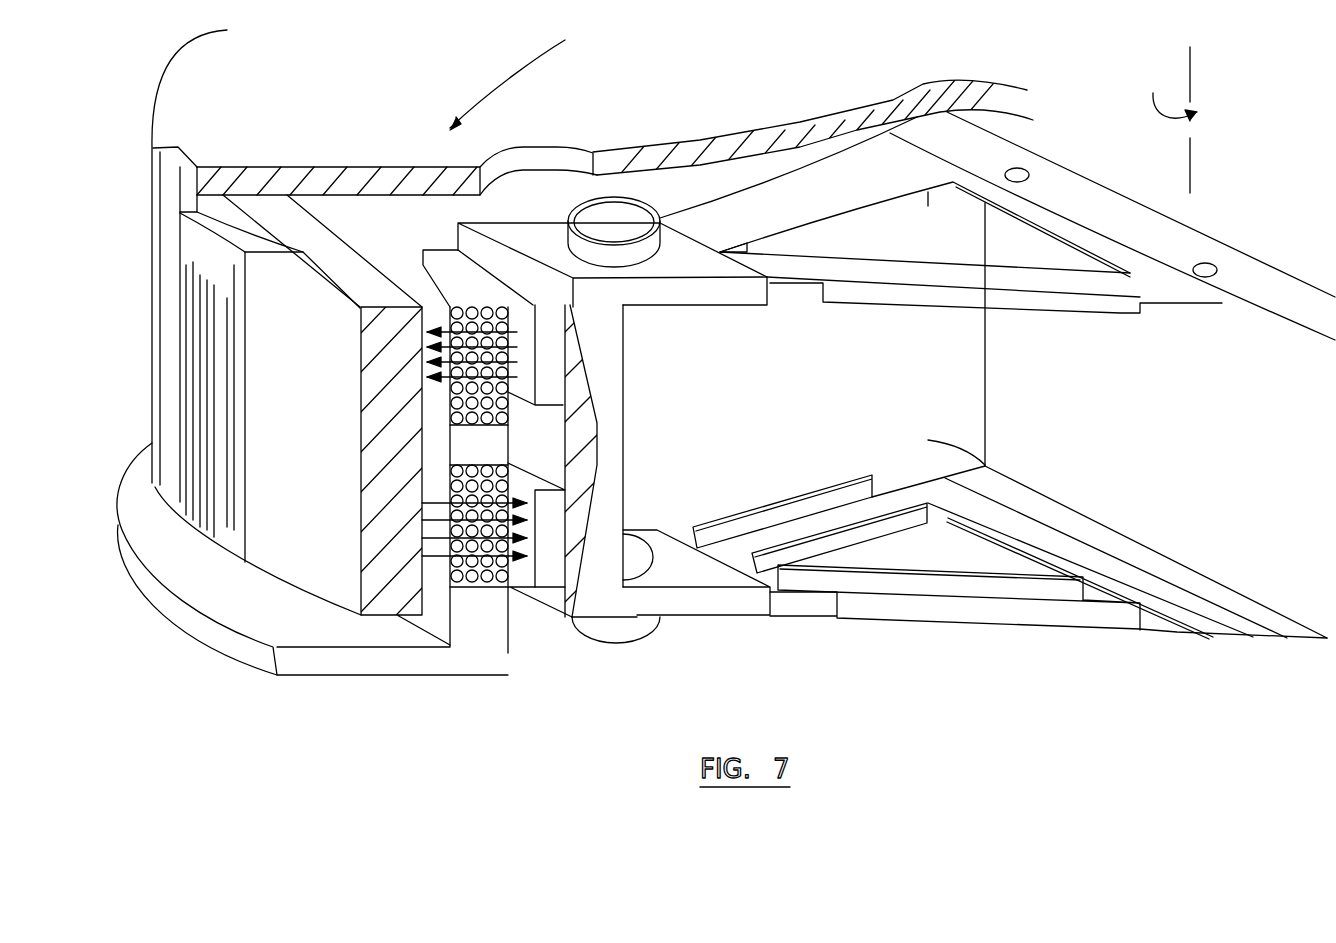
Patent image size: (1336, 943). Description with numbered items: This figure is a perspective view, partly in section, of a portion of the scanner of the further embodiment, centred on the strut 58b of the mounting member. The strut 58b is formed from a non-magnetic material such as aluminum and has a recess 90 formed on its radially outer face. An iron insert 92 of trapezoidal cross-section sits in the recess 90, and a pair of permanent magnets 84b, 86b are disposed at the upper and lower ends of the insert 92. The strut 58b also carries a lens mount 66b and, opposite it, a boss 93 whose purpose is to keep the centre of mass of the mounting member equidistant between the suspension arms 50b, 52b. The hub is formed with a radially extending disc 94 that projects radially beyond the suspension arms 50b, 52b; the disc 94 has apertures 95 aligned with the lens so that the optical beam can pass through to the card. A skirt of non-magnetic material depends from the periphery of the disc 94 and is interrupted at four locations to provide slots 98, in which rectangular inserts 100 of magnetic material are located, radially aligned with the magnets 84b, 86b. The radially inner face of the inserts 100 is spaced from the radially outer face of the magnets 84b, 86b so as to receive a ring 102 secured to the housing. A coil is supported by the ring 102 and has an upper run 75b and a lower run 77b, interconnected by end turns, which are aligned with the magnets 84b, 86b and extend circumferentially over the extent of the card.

The suspension arm 50b is at (1020, 305).
The suspension arm 52b is at (1117, 618).
The strut 58b is at (614, 331).
The lens mount 66b is at (570, 238).
The upper run 75b is at (450, 305).
The lower run 77b is at (518, 596).
The permanent magnet 84b is at (583, 315).
The permanent magnet 86b is at (550, 500).
The recess 90 is at (584, 380).
The iron insert 92 is at (597, 424).
The boss 93 is at (640, 630).
The disc 94 is at (787, 132).
The aperture 95 is at (530, 153).
The slot 98 is at (270, 347).
The rectangular insert 100 is at (315, 423).
The ring 102 is at (487, 660).